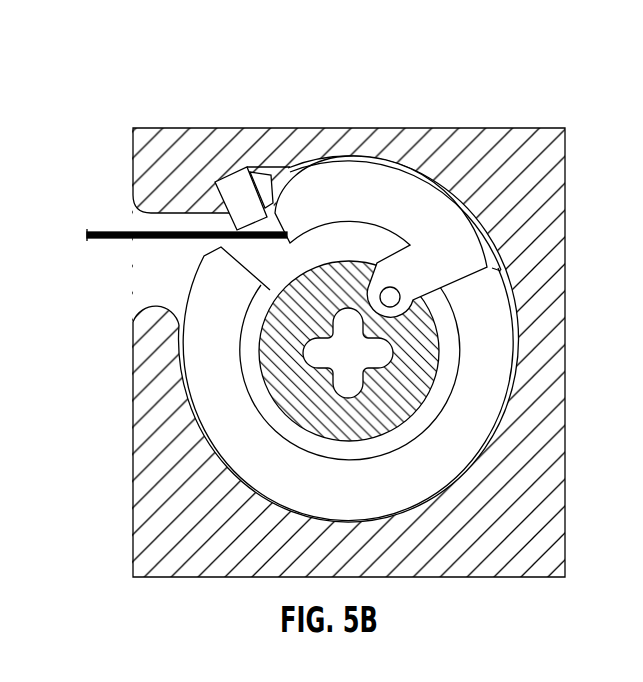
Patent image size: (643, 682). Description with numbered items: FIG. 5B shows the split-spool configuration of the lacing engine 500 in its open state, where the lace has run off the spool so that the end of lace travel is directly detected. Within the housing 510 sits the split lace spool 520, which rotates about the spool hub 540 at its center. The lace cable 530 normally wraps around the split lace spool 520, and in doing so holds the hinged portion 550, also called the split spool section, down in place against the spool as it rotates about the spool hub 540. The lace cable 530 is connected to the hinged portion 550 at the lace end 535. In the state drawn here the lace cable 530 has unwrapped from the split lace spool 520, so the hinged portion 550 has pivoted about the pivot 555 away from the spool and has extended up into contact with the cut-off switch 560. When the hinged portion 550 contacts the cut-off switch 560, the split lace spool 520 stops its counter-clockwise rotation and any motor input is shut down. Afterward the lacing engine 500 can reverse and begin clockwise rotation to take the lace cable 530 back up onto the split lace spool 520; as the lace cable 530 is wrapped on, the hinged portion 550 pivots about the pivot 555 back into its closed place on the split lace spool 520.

The lacing engine 500 is at (104, 104).
The housing 510 is at (132, 167).
The split lace spool 520 is at (200, 297).
The lace cable 530 is at (117, 230).
The lace end 535 is at (335, 157).
The spool hub 540 is at (306, 354).
The hinged portion 550 is at (433, 240).
The pivot 555 is at (400, 297).
The cut-off switch 560 is at (230, 180).